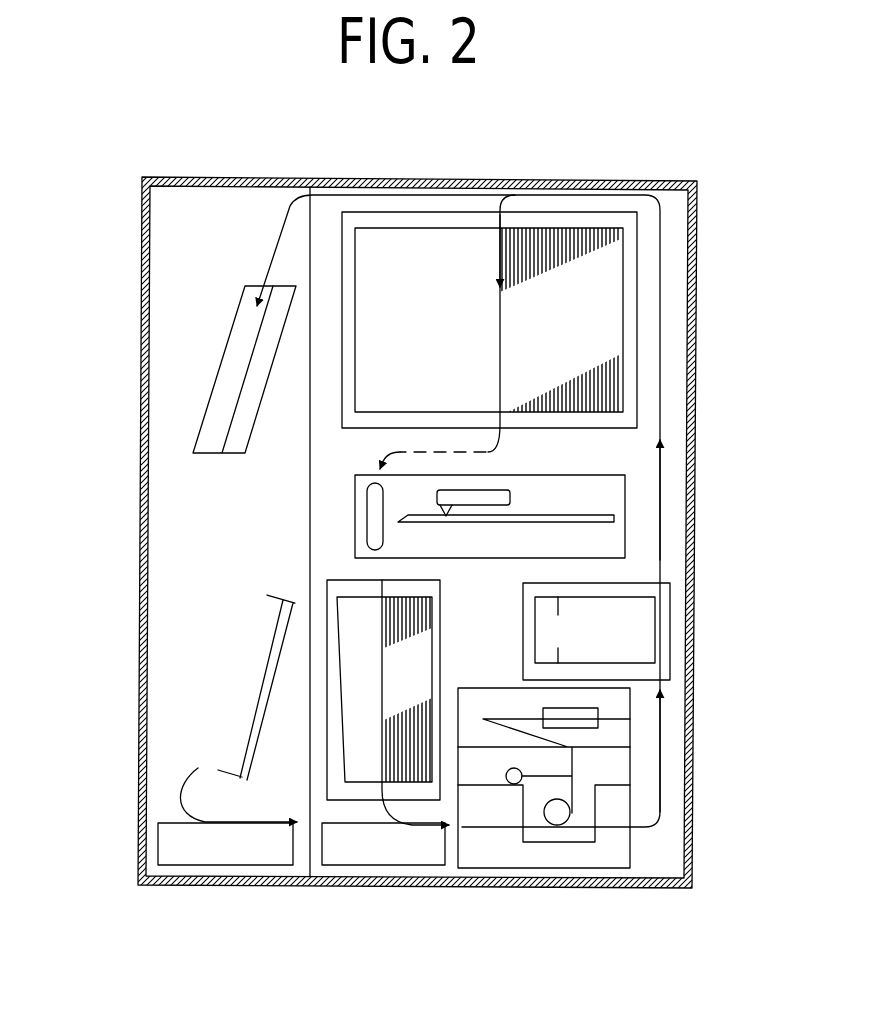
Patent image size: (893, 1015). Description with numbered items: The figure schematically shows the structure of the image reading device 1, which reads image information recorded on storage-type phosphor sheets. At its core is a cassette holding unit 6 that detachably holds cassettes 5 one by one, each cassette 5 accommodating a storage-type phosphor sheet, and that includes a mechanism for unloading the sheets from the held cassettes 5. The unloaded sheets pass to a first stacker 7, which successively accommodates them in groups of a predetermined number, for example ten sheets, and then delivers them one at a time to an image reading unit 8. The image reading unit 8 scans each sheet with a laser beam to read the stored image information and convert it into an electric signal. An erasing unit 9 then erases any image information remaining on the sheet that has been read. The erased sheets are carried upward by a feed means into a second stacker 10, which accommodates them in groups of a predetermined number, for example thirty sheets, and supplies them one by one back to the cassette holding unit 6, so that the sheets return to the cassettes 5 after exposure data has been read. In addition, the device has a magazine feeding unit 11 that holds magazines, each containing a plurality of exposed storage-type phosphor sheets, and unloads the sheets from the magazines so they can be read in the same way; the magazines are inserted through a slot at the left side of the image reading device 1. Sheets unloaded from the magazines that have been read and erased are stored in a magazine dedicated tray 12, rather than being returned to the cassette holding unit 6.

The image reading device 1 is at (468, 158).
The cassette 5 is at (587, 523).
The cassette holding unit 6 is at (612, 500).
The first stacker 7 is at (370, 763).
The image reading unit 8 is at (615, 735).
The erasing unit 9 is at (638, 650).
The second stacker 10 is at (598, 323).
The magazine feeding unit 11 is at (248, 722).
The magazine dedicated tray 12 is at (235, 380).